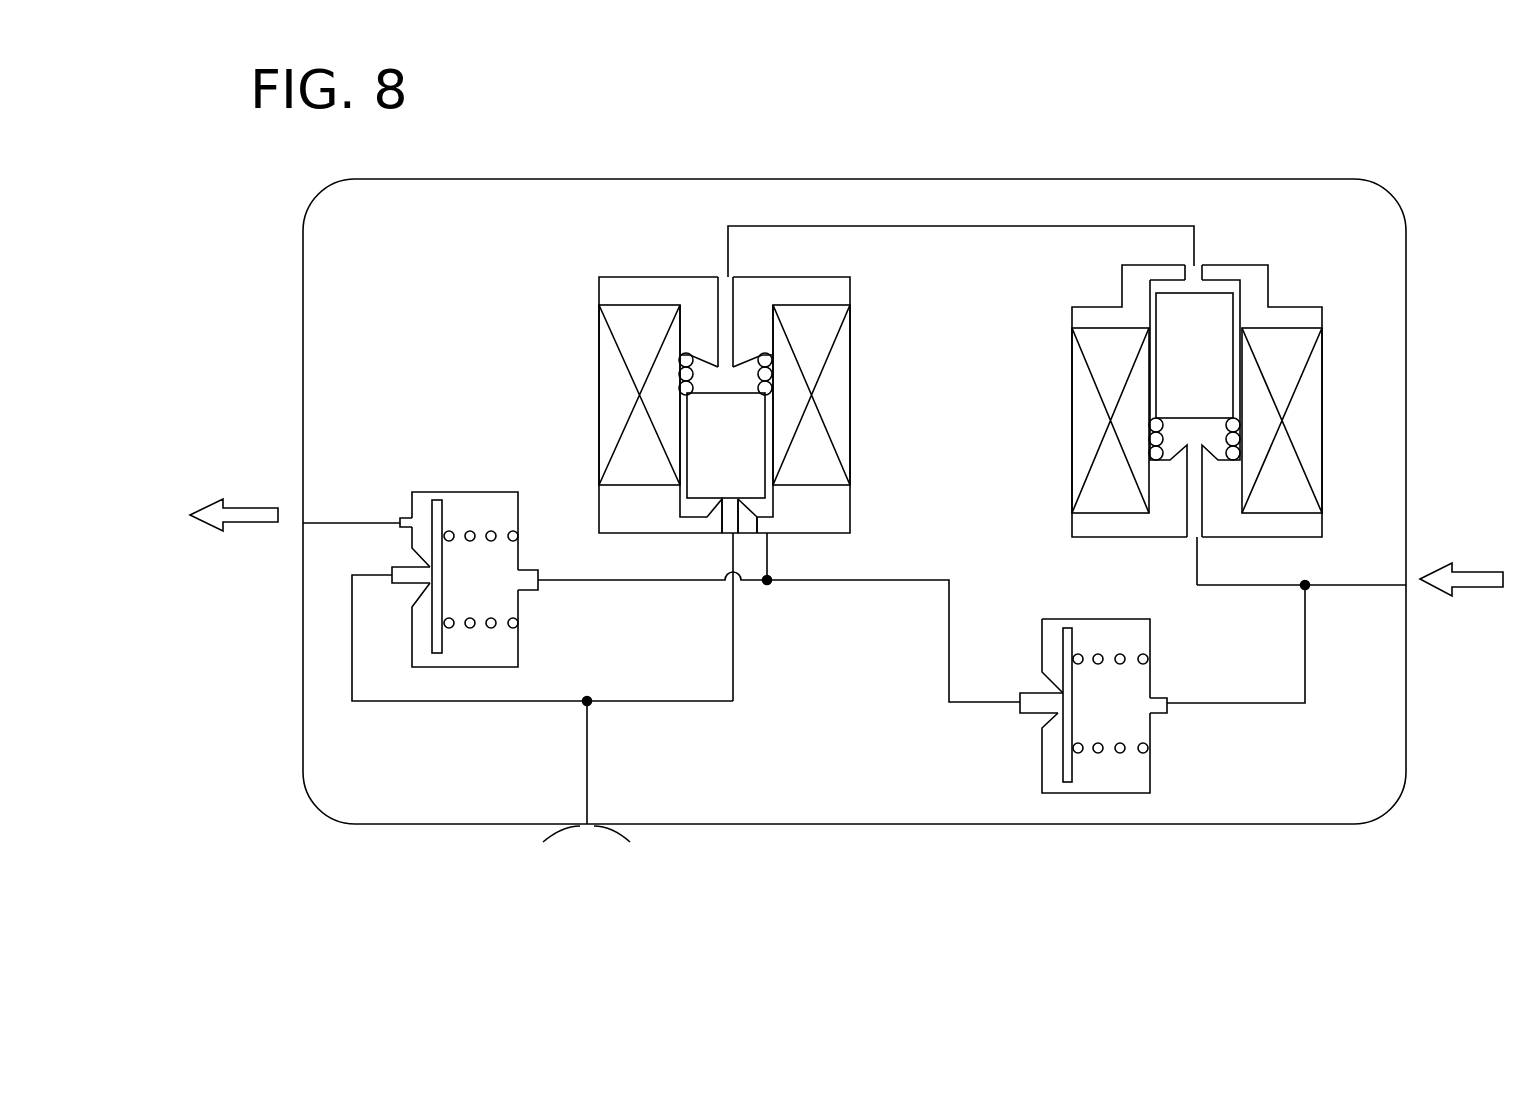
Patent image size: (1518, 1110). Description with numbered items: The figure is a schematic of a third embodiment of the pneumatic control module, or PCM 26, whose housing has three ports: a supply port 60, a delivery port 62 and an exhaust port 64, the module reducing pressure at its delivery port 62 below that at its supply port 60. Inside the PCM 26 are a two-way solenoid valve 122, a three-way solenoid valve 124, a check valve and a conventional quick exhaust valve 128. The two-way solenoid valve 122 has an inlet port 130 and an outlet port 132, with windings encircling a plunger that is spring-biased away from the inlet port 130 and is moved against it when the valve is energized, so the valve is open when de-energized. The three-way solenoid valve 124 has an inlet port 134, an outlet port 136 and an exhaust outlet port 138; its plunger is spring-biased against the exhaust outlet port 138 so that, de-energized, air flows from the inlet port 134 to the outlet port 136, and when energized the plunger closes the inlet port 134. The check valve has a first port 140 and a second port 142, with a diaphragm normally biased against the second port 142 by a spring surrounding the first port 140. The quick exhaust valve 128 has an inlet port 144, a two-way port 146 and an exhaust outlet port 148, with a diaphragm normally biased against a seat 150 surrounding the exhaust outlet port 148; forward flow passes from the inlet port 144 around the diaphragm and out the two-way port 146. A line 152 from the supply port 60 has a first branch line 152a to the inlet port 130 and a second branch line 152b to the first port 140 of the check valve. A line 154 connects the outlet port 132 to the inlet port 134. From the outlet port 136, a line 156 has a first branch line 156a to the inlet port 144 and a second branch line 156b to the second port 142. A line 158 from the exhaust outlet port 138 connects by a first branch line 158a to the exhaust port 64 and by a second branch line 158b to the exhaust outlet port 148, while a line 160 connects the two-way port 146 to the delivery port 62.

The pneumatic control module 26 is at (917, 181).
The line 154 is at (1003, 226).
The 3-way solenoid valve 124 is at (680, 277).
The inlet port 134 is at (733, 277).
The outlet port 132 is at (1197, 265).
The 2-way solenoid valve 122 is at (1253, 265).
The line 160 is at (328, 523).
The two-way port 146 is at (400, 520).
The quick exhaust valve 128 is at (478, 492).
The delivery port 62 is at (303, 523).
The exhaust outlet port 148 is at (392, 570).
The seat 150 is at (430, 583).
The inlet port 144 is at (538, 578).
The first branch line 156a is at (596, 584).
The line 156 is at (765, 582).
The line 158 is at (770, 682).
The exhaust outlet port 138 is at (725, 535).
The outlet port 136 is at (770, 535).
The second branch line 156b is at (905, 580).
The inlet port 130 is at (1194, 537).
The first branch line 152a is at (1197, 560).
The line 152 is at (1363, 587).
The supply port 60 is at (1407, 587).
The second port 142 is at (1020, 702).
The first port 140 is at (1167, 703).
The second branch line 152b is at (1240, 703).
The second branch line 158b is at (413, 703).
The first branch line 158a is at (589, 767).
The exhaust port 64 is at (587, 826).